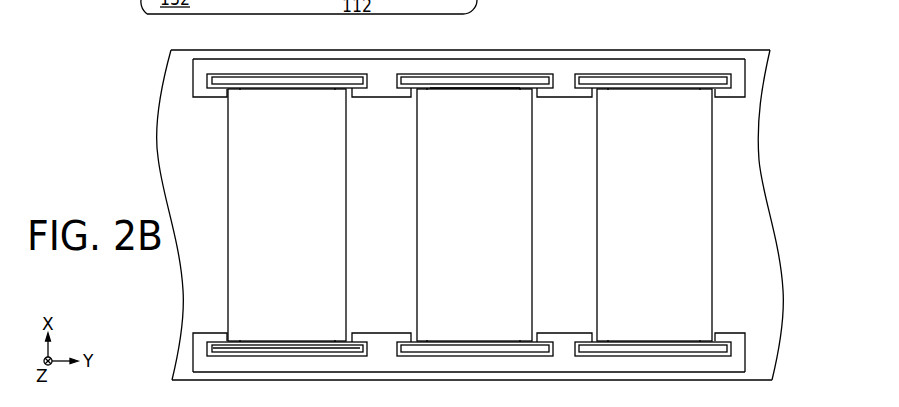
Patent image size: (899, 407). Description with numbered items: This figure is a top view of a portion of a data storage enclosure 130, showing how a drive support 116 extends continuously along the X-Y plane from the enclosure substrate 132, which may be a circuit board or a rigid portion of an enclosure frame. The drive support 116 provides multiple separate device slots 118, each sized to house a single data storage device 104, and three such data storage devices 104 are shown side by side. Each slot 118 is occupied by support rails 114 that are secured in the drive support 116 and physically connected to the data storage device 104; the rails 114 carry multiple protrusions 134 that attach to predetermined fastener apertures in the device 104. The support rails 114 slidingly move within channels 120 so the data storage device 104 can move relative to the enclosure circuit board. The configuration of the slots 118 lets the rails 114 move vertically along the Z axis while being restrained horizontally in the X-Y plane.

The data storage device 104 is at (303, 223).
The support rail 114 is at (670, 88).
The drive support 116 is at (566, 60).
The device slot 118 is at (225, 99).
The channel 120 is at (210, 349).
The data storage enclosure 130 is at (755, 33).
The enclosure substrate 132 is at (770, 308).
The protrusion 134 is at (475, 89).